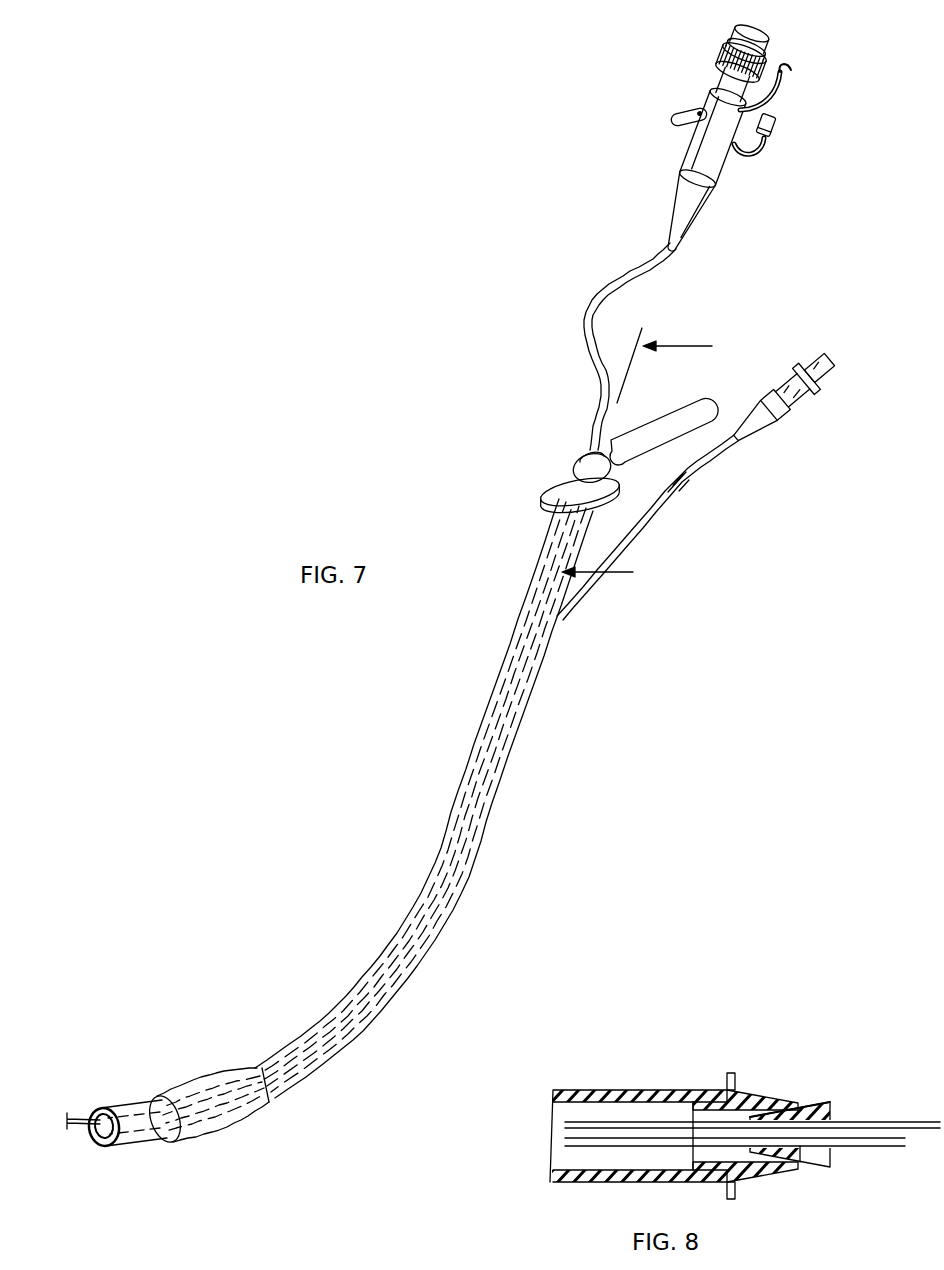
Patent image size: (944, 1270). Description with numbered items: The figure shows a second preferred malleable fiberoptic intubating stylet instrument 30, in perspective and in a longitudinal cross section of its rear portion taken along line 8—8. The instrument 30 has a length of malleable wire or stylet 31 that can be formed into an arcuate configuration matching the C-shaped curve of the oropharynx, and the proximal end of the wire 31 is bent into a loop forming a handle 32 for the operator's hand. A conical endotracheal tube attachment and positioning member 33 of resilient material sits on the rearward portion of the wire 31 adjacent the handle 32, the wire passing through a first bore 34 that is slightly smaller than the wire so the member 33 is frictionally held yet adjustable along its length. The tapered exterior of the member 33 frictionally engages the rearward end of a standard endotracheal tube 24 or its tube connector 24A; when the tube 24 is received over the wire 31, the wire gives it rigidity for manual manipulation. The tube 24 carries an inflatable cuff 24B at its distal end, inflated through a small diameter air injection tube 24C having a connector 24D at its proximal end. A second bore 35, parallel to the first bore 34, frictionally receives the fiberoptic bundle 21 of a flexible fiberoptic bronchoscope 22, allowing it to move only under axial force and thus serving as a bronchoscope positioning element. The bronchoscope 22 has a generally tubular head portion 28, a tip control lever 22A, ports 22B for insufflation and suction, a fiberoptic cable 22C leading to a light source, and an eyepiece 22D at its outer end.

In FIG. 7, the section line 8 is at (645, 458).
In FIG. 7, the fiberoptic bundle 21 is at (590, 354).
In FIG. 8, the fiberoptic bundle 21 is at (907, 1121).
In FIG. 7, the fiberoptic bronchoscope 22 is at (658, 204).
In FIG. 7, the tip control lever 22A is at (671, 118).
In FIG. 7, the ports 22B is at (767, 137).
In FIG. 7, the fiberoptic cable 22C is at (785, 80).
In FIG. 7, the eyepiece 22D is at (734, 31).
In FIG. 7, the endotracheal tube 24 is at (500, 672).
In FIG. 8, the endotracheal tube 24 is at (607, 1089).
In FIG. 7, the tube connector 24A is at (566, 488).
In FIG. 8, the tube connector 24A is at (758, 1090).
In FIG. 7, the inflatable cuff 24B is at (212, 1080).
In FIG. 7, the air injection tube 24C is at (714, 468).
In FIG. 7, the connector 24D is at (802, 396).
In FIG. 7, the tubular head portion 28 is at (688, 160).
In FIG. 7, the malleable fiberoptic intubating stylet instrument 30 is at (597, 661).
In FIG. 7, the malleable wire 31 is at (504, 758).
In FIG. 8, the malleable wire 31 is at (872, 1148).
In FIG. 7, the handle 32 is at (713, 396).
In FIG. 7, the endotracheal tube attachment and positioning member 33 is at (574, 464).
In FIG. 8, the endotracheal tube attachment and positioning member 33 is at (810, 1102).
In FIG. 8, the first bore 34 is at (798, 1162).
In FIG. 8, the second bore 35 is at (832, 1105).